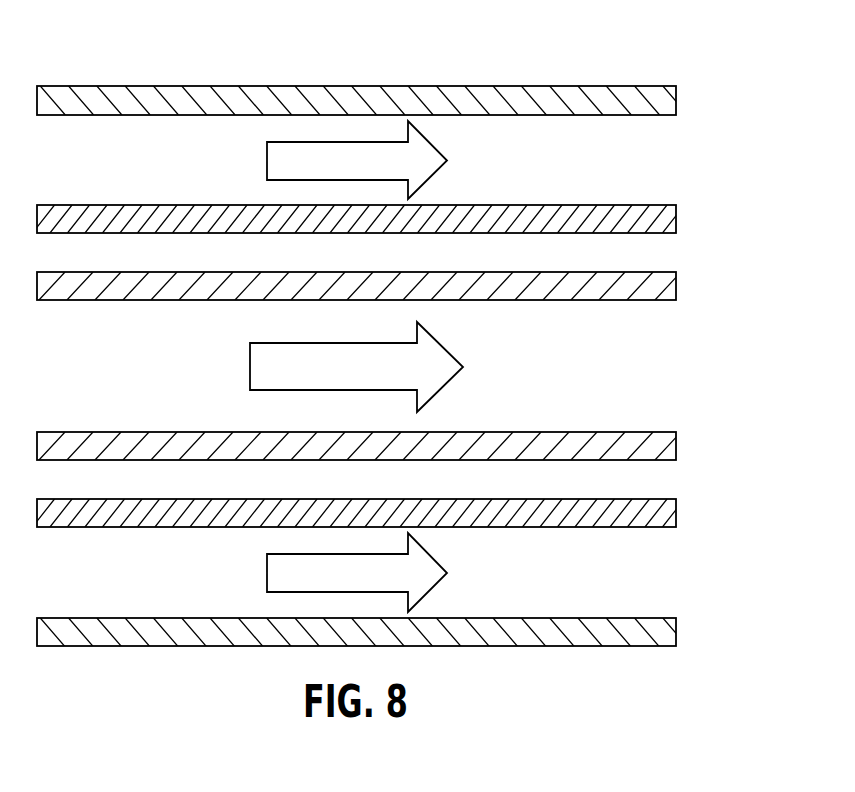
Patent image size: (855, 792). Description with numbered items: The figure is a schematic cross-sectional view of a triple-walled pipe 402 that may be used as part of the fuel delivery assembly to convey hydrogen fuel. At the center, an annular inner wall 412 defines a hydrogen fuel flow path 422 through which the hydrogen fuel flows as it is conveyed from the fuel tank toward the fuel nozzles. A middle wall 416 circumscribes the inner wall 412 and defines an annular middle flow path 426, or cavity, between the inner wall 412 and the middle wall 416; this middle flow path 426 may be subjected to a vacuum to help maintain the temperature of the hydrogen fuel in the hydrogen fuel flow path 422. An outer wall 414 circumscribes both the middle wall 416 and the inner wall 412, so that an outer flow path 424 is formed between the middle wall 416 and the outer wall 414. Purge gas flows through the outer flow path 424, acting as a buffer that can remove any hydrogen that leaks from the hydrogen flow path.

The triple-walled pipe 402 is at (708, 33).
The inner wall 412 is at (676, 286).
The outer wall 414 is at (676, 101).
The middle wall 416 is at (676, 217).
The hydrogen fuel flow path 422 is at (538, 379).
The outer flow path 424 is at (538, 174).
The middle flow path 426 is at (538, 267).